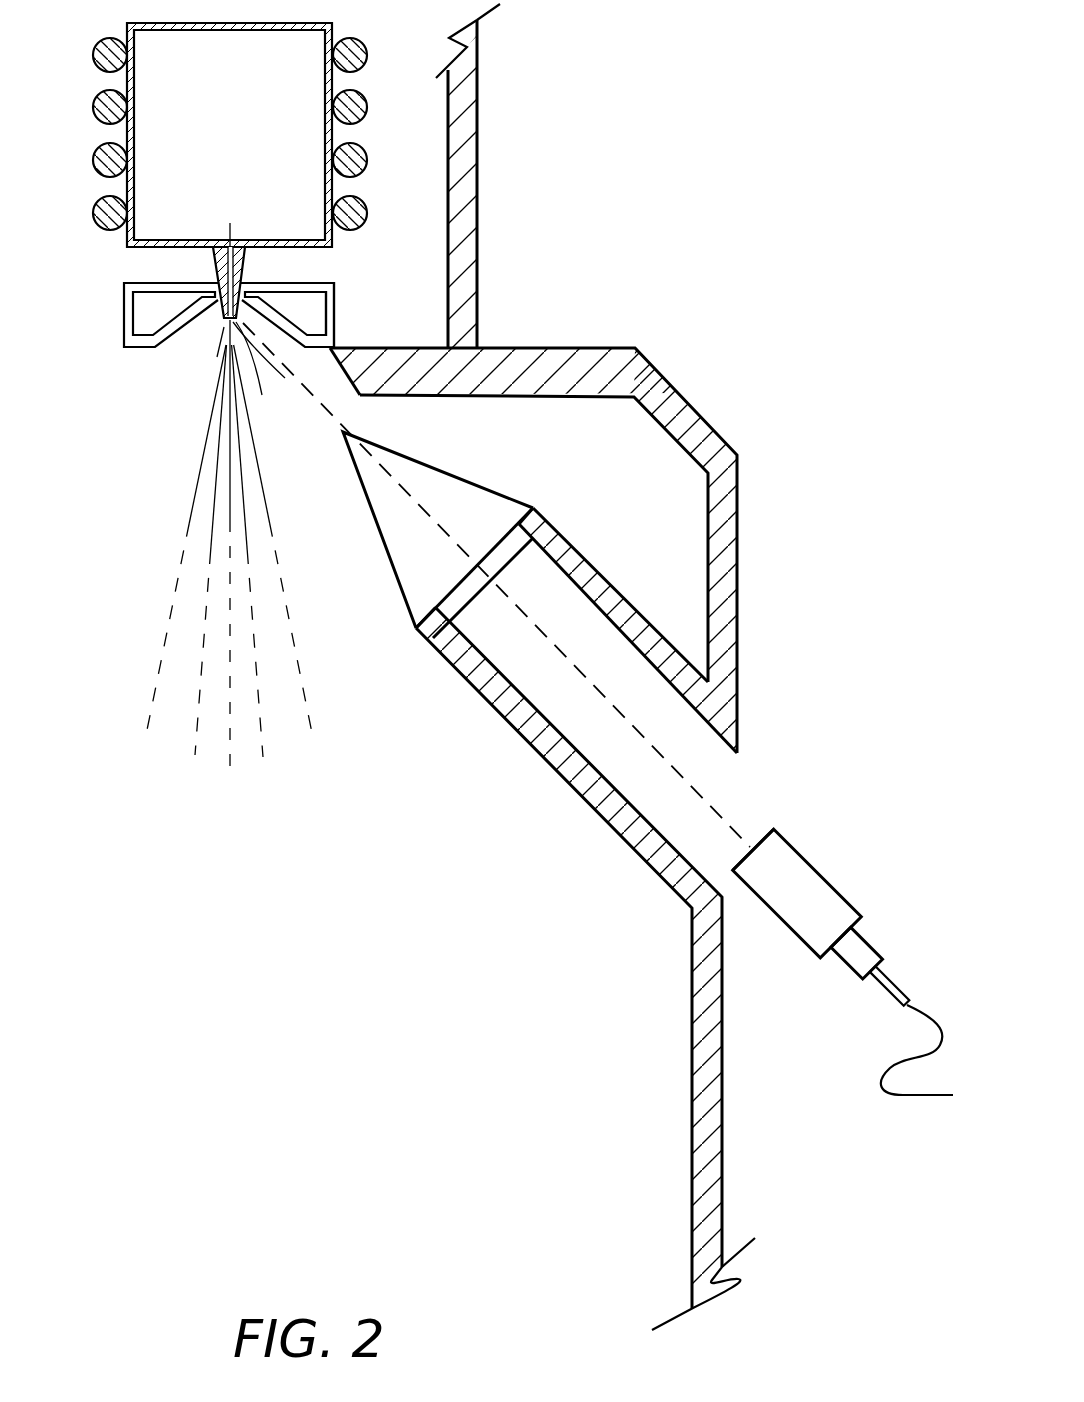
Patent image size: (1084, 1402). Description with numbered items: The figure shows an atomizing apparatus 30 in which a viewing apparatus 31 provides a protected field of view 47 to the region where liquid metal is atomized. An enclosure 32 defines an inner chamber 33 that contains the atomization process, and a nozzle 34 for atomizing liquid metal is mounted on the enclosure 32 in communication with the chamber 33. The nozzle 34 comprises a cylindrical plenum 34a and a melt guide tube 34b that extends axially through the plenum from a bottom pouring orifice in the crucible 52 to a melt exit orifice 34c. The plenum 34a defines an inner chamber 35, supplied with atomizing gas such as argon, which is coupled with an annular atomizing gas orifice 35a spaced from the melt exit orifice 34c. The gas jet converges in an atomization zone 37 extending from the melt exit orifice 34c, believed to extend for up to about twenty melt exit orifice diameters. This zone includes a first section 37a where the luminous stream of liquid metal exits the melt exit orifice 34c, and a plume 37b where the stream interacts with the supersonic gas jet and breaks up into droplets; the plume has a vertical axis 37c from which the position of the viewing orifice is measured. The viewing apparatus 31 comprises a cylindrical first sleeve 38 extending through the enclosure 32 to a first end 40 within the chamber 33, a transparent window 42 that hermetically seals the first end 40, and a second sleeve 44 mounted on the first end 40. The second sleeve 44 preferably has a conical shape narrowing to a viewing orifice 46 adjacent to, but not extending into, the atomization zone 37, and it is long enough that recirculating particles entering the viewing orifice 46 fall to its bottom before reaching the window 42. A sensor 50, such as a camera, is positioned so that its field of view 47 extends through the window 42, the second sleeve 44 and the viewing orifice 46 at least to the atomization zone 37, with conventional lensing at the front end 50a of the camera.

The atomizing apparatus 30 is at (745, 232).
The viewing apparatus 31 is at (412, 711).
The enclosure 32 is at (739, 548).
The inner chamber 33 is at (412, 872).
The nozzle 34 is at (352, 297).
The cylindrical plenum 34a is at (323, 332).
The melt guide tube 34b is at (243, 278).
The melt exit orifice 34c is at (209, 337).
The inner chamber 35 is at (142, 300).
The annular atomizing gas orifice 35a is at (282, 352).
The atomization zone 37 is at (225, 543).
The first section 37a is at (272, 539).
The plume 37b is at (202, 440).
The vertical axis 37c is at (228, 513).
The first sleeve 38 is at (576, 793).
The first end 40 is at (538, 502).
The transparent window 42 is at (515, 560).
The second sleeve 44 is at (425, 600).
The viewing orifice 46 is at (343, 445).
The field of view 47 is at (433, 530).
The sensor 50 is at (820, 867).
The front end 50a is at (748, 846).
The crucible 52 is at (340, 26).